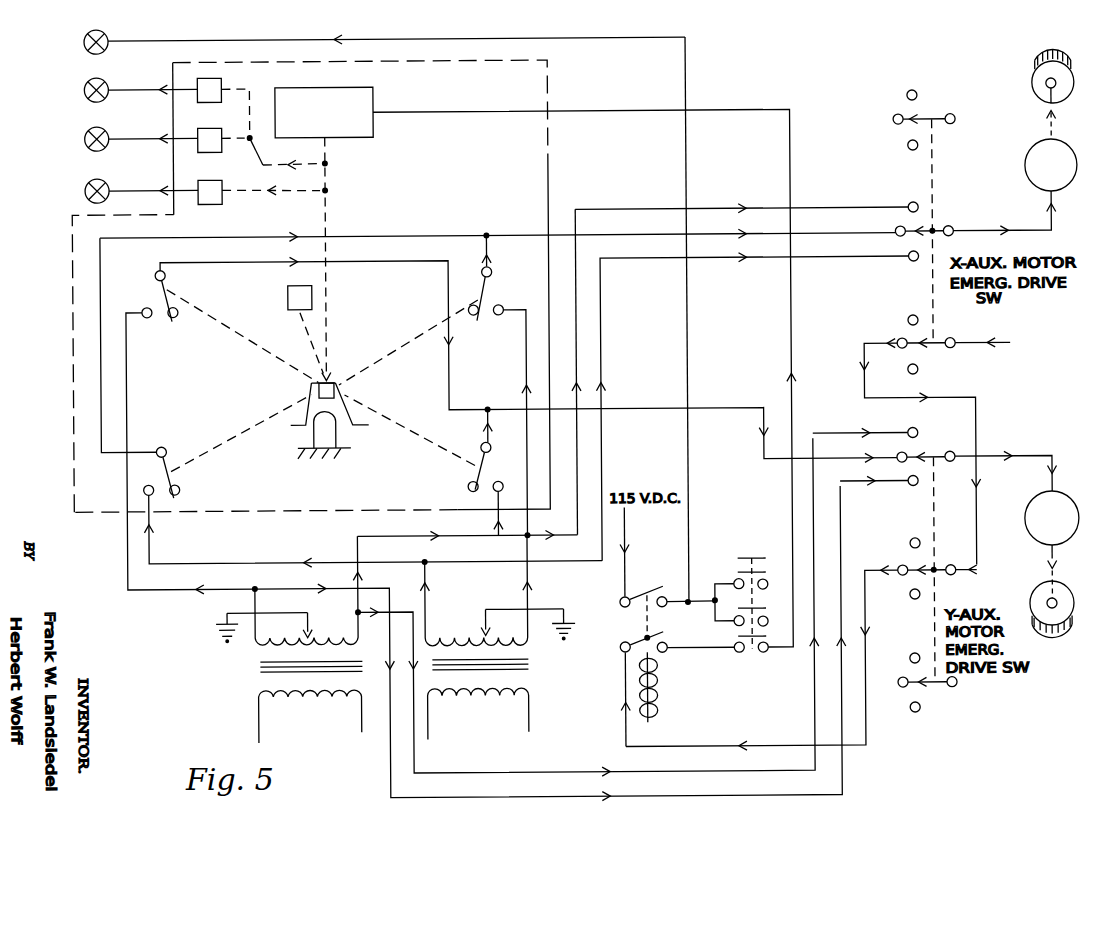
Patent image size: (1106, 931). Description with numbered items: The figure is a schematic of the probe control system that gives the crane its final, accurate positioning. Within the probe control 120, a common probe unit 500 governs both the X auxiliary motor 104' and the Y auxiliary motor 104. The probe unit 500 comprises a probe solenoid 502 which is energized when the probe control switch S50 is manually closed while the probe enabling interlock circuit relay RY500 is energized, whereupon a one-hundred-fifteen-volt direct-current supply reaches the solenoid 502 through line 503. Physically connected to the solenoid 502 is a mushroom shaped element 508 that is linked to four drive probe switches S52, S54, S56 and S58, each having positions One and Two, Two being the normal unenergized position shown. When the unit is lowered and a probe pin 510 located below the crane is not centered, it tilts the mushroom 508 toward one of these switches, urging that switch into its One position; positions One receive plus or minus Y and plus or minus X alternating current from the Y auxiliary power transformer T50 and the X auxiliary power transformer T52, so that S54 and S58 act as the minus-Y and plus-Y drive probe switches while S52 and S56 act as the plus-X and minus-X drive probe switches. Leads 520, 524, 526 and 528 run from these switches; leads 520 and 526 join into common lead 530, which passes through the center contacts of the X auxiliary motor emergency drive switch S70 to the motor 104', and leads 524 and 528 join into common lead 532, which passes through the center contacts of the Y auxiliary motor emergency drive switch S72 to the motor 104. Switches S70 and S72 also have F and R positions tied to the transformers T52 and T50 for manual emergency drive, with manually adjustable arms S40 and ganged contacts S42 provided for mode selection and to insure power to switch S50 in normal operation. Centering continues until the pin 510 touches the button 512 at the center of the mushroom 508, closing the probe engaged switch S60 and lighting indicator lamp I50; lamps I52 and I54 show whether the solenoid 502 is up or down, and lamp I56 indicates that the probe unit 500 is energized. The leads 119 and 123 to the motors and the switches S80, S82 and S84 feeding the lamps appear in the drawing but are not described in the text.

The Y auxiliary motor 104 is at (1037, 564).
The X auxiliary motor 104' is at (1023, 120).
The motor lead to Y motor 119 is at (992, 455).
The probe control 120 is at (71, 385).
The motor lead to X motor 123 is at (1042, 226).
The probe unit 500 is at (550, 172).
The probe solenoid 502 is at (379, 98).
The line 503 is at (796, 321).
The mushroom shaped element 508 is at (298, 408).
The probe pin 510 is at (336, 436).
The button 512 is at (341, 384).
The electrical lead 520 is at (370, 235).
The electrical lead 524 is at (375, 260).
The electrical lead 526 is at (529, 231).
The electrical lead 528 is at (491, 424).
The common lead 530 is at (602, 236).
The common lead 532 is at (609, 409).
The indicator lamp I50 is at (88, 188).
The indicator lamp I52 is at (88, 87).
The indicator lamp I54 is at (90, 133).
The indicator lamp I56 is at (88, 40).
The manually adjustable arm S40 is at (922, 120).
The ganged contact S42 is at (926, 339).
The probe control switch S50 is at (934, 738).
The +X drive probe switch S52 is at (911, 564).
The −Y drive probe switch S54 is at (483, 524).
The −X drive probe switch S56 is at (435, 385).
The +Y drive probe switch S58 is at (462, 375).
The probe engaged switch S60 is at (288, 291).
The X auxiliary motor emergency drive switch S70 is at (937, 226).
The Y auxiliary motor emergency drive switch S72 is at (891, 545).
The lamp switch S80 is at (210, 75).
The lamp switch S82 is at (224, 117).
The lamp switch S84 is at (225, 169).
The Y auxiliary power transformer T50 is at (257, 670).
The X auxiliary power transformer T52 is at (527, 669).
The probe enabling interlock circuit relay RY500 is at (677, 627).